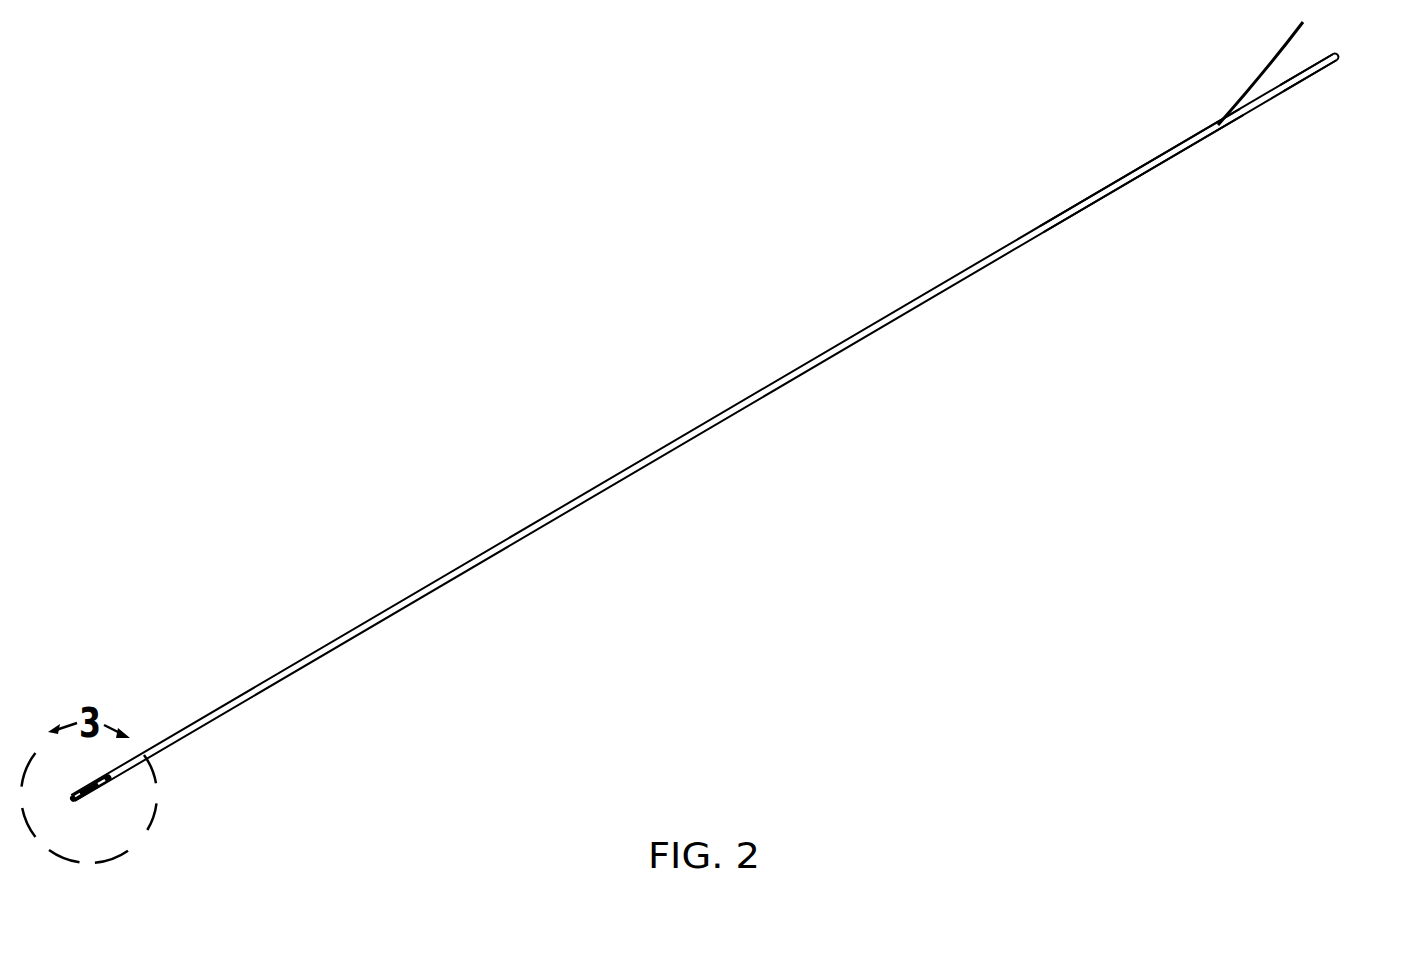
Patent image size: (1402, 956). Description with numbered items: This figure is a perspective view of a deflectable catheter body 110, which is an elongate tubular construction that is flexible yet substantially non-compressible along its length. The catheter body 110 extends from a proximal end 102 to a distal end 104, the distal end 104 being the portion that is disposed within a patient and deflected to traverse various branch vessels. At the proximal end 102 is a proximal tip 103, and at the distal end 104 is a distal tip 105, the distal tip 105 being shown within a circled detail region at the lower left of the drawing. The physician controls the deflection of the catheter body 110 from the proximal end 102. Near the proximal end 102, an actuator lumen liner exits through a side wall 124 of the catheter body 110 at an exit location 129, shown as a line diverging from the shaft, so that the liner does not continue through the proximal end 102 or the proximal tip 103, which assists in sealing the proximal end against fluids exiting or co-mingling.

The deflectable catheter body 110 is at (703, 424).
The side wall 124 is at (1140, 167).
The proximal end 102 is at (1317, 72).
The proximal tip 103 is at (1338, 54).
The exit location 129 is at (1252, 90).
The distal end 104 is at (93, 795).
The distal tip 105 is at (72, 801).